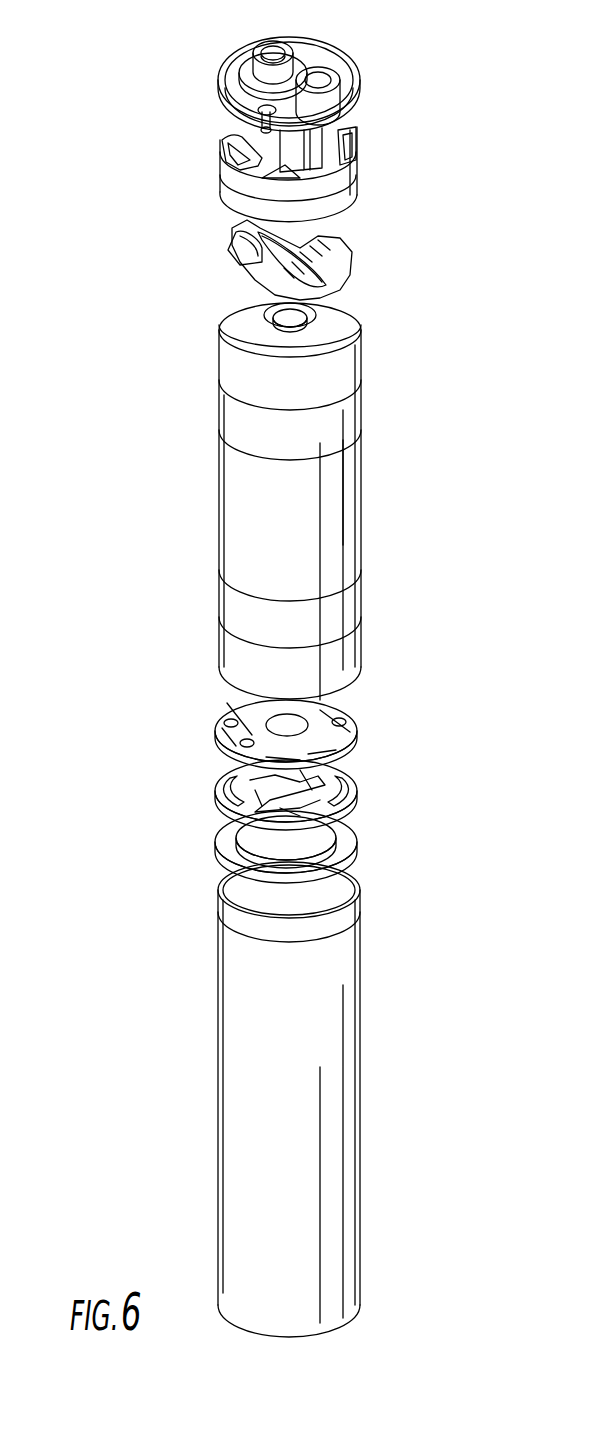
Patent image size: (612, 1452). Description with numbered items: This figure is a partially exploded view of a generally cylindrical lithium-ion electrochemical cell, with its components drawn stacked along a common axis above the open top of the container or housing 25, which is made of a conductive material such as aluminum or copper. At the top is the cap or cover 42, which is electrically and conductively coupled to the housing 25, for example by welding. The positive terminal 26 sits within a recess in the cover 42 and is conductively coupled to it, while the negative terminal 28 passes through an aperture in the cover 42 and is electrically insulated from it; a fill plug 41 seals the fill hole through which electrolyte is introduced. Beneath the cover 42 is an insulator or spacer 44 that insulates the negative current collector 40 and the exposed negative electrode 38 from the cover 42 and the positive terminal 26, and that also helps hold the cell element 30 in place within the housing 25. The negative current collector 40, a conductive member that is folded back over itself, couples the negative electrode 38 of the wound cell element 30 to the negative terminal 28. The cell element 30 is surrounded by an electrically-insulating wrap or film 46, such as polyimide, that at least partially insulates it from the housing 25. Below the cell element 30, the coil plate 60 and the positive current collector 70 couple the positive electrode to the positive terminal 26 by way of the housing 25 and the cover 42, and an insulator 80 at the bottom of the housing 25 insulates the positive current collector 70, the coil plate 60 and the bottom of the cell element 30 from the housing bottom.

The housing 25 is at (247, 1135).
The positive terminal 26 is at (332, 97).
The negative terminal 28 is at (247, 67).
The cell element 30 is at (245, 523).
The negative electrode 38 is at (235, 308).
The negative current collector 40 is at (322, 245).
The fill plug 41 is at (233, 108).
The cover 42 is at (362, 80).
The spacer 44 is at (227, 195).
The film 46 is at (340, 545).
The coil plate 60 is at (355, 722).
The positive current collector 70 is at (358, 790).
The insulator 80 is at (360, 845).